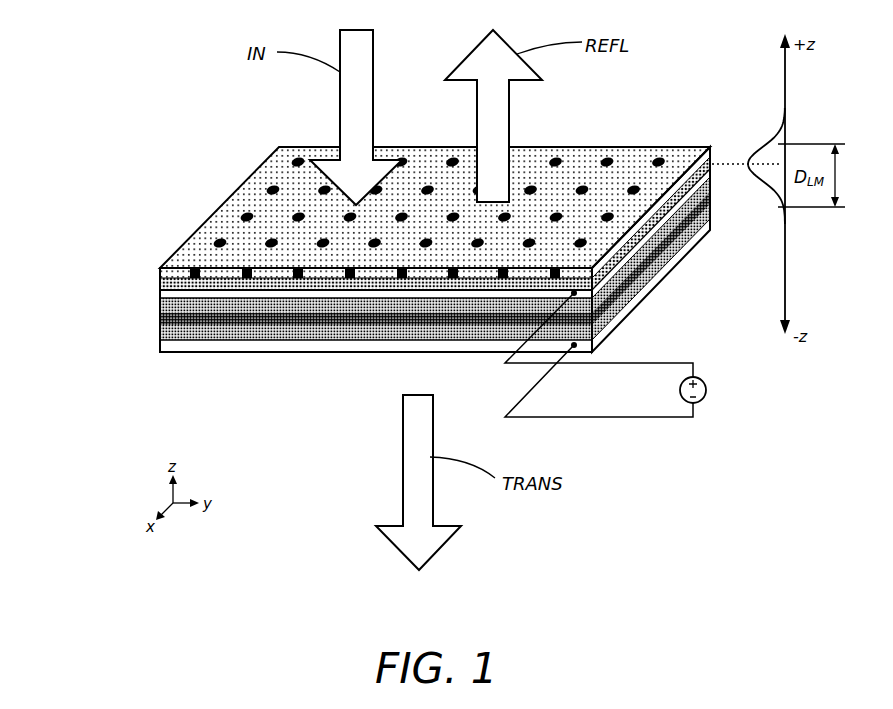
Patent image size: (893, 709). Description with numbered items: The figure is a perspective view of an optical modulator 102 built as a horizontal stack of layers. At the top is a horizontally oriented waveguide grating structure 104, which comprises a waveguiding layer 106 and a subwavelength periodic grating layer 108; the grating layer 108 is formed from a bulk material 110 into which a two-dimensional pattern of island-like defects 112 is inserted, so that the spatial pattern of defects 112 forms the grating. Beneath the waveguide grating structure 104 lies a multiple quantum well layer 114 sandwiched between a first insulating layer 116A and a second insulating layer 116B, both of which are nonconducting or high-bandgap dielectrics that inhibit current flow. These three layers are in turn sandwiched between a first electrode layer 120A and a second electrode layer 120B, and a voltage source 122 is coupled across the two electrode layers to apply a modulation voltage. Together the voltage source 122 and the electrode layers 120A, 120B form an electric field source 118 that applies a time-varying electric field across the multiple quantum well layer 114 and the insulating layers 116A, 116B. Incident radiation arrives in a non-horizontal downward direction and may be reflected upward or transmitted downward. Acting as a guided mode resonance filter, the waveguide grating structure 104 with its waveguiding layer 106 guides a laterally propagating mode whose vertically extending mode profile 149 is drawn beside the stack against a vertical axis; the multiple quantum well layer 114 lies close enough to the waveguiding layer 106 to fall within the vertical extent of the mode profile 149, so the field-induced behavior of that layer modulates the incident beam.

The optical modulator 102 is at (364, 232).
The waveguide grating structure 104 is at (364, 224).
The waveguiding layer 106 is at (160, 287).
The subwavelength periodic grating layer 108 is at (160, 272).
The bulk material 110 is at (638, 150).
The defects 112 is at (583, 186).
The multiple quantum well layer 114 is at (160, 318).
The first insulating layer 116A is at (160, 303).
The second insulating layer 116B is at (160, 333).
The electric field source 118 is at (703, 360).
The first electrode layer 120A is at (640, 247).
The second electrode layer 120B is at (617, 322).
The voltage source 122 is at (674, 372).
The mode profile 149 is at (758, 140).